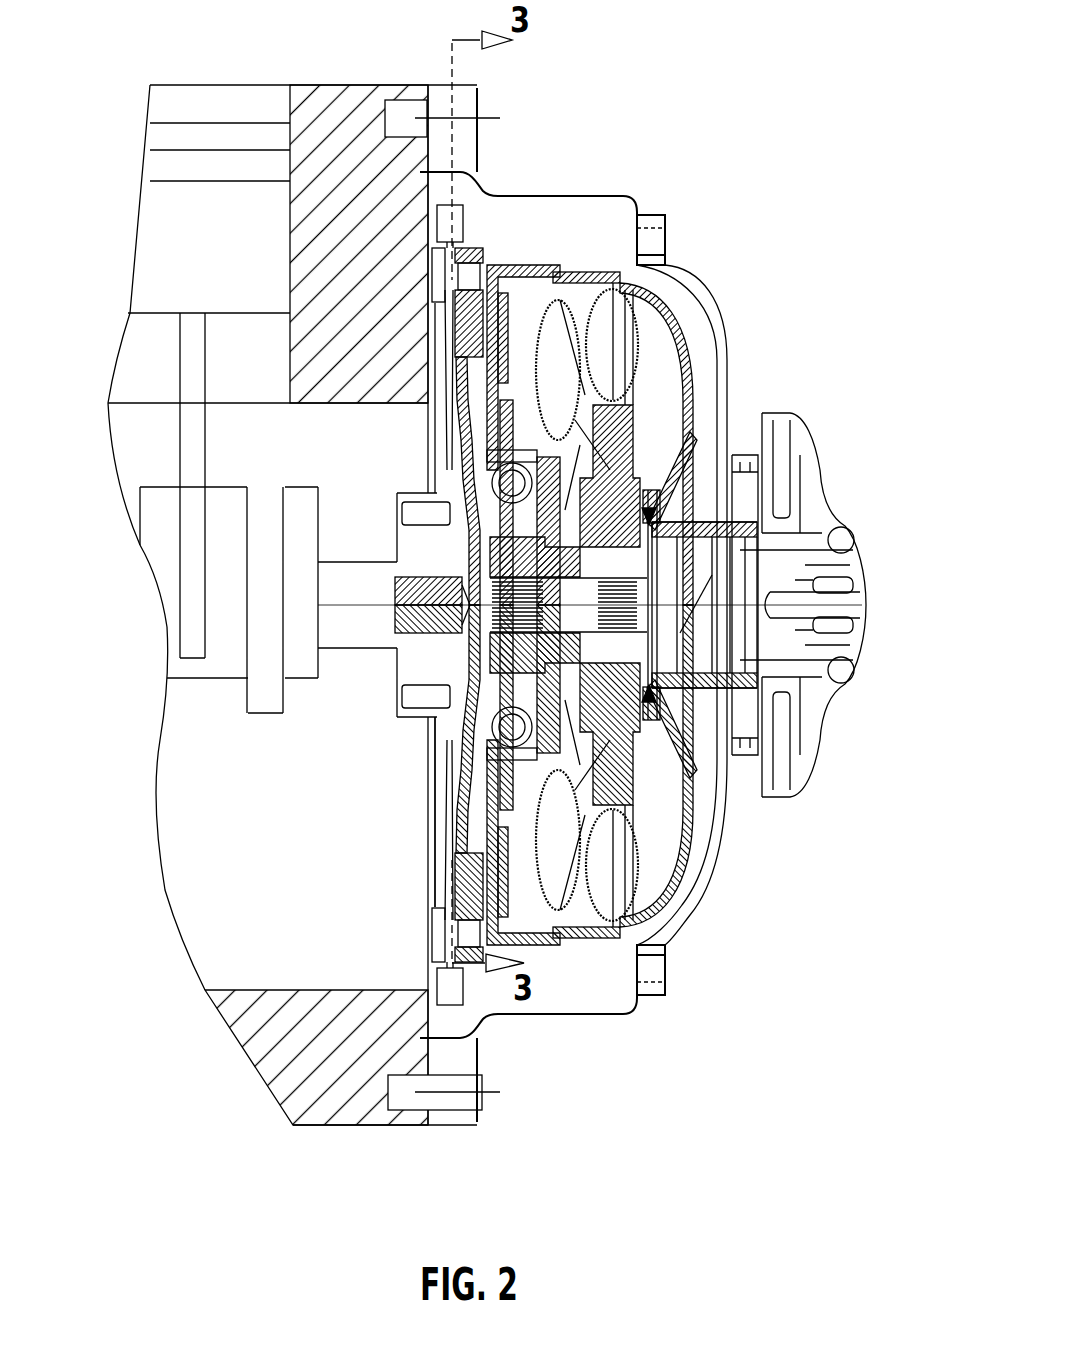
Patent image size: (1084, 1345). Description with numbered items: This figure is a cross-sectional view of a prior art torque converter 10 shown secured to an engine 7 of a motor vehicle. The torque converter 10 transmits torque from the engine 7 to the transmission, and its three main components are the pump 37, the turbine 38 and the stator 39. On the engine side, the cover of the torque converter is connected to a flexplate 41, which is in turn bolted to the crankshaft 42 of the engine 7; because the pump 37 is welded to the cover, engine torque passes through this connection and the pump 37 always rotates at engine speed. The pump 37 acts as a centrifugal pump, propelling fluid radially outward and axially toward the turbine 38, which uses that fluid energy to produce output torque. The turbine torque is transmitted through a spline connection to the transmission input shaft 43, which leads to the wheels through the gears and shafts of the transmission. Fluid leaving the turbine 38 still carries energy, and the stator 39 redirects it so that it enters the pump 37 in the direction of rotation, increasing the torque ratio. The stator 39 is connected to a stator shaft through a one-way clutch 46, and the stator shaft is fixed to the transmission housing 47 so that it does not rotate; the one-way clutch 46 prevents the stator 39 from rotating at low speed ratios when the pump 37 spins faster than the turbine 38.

The engine 7 is at (447, 1027).
The torque converter 10 is at (589, 611).
The pump 37 is at (688, 888).
The turbine 38 is at (543, 890).
The stator 39 is at (585, 786).
The flexplate 41 is at (449, 764).
The crankshaft 42 is at (378, 657).
The transmission input shaft 43 is at (793, 623).
The one-way clutch 46 is at (646, 717).
The transmission housing 47 is at (790, 545).